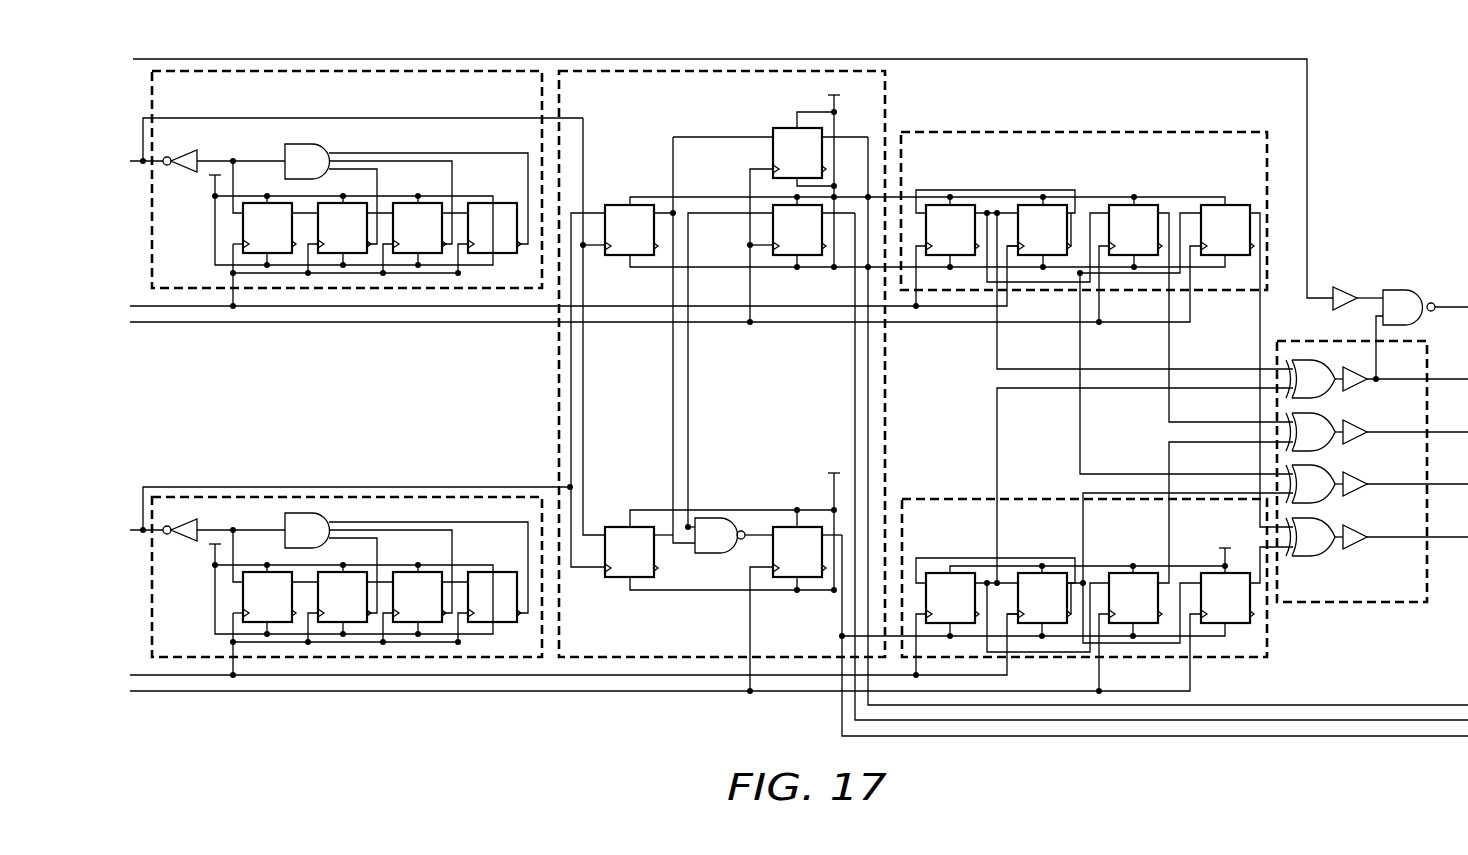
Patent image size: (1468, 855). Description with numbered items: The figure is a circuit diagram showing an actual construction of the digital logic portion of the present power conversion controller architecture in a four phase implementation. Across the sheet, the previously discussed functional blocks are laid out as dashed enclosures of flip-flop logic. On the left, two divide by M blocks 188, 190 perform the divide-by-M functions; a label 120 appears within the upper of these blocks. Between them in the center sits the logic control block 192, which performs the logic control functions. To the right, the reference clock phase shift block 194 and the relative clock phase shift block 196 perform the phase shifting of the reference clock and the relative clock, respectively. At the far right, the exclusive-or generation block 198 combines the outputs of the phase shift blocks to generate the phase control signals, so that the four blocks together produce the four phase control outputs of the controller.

The flip-flop shift register 120 is at (202, 282).
The divide by M block 188 is at (498, 108).
The divide by M block 190 is at (202, 648).
The logic control block 192 is at (654, 113).
The reference clock phase shift block 194 is at (1238, 171).
The relative clock phase shift block 196 is at (959, 537).
The exclusive-or generation block 198 is at (1416, 584).